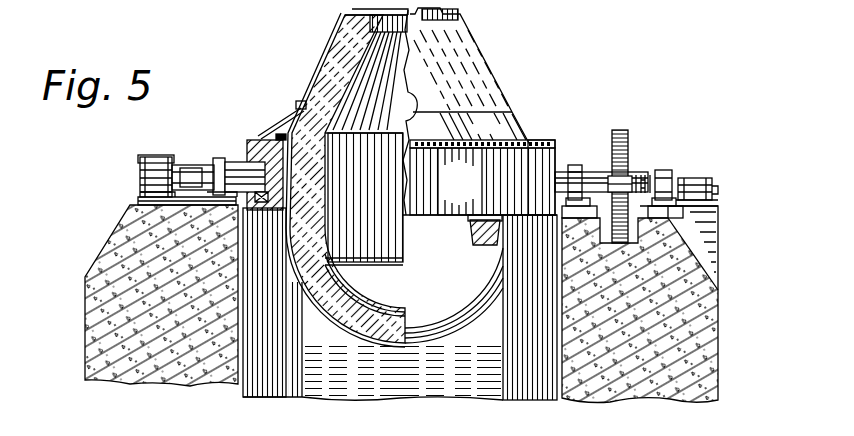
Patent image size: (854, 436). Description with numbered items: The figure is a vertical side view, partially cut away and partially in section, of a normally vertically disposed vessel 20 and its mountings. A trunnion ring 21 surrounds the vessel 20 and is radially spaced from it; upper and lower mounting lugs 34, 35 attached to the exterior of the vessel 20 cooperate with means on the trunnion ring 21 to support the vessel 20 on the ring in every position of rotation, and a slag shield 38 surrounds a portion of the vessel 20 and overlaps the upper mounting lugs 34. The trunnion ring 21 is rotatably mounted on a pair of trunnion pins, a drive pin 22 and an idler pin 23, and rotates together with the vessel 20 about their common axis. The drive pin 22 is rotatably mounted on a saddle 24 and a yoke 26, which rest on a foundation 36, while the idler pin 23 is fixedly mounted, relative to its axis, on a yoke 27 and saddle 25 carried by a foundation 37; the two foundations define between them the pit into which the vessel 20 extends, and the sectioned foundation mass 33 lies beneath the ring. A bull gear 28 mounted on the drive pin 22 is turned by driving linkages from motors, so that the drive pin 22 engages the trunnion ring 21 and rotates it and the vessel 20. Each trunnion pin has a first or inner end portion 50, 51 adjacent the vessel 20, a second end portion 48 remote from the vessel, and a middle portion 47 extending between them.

The vessel 20 is at (432, 91).
The trunnion ring 21 is at (442, 197).
The drive pin 22 is at (597, 172).
The idler pin 23 is at (200, 165).
The saddle 24 is at (577, 165).
The saddle 25 is at (218, 158).
The yoke 26 is at (660, 170).
The yoke 27 is at (155, 155).
The bull gear 28 is at (620, 130).
The foundation floor 33 is at (278, 393).
The upper mounting lugs 34 is at (282, 134).
The lower mounting lugs 35 is at (279, 216).
The foundation 36 is at (703, 340).
The foundation 37 is at (100, 304).
The slag shield 38 is at (300, 104).
The middle portion 47 is at (183, 168).
The second end portion 48 is at (142, 174).
The first or inner end portion 50 is at (543, 148).
The first or inner end portion 51 is at (248, 175).